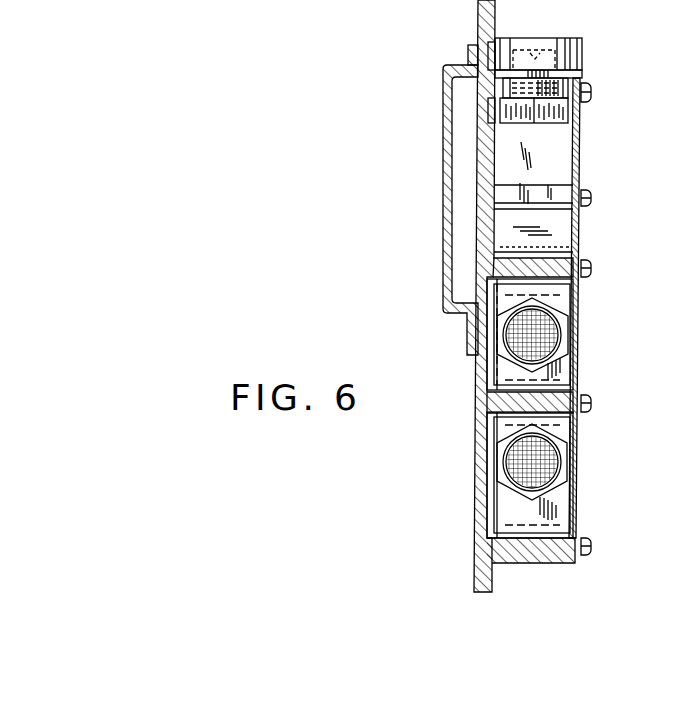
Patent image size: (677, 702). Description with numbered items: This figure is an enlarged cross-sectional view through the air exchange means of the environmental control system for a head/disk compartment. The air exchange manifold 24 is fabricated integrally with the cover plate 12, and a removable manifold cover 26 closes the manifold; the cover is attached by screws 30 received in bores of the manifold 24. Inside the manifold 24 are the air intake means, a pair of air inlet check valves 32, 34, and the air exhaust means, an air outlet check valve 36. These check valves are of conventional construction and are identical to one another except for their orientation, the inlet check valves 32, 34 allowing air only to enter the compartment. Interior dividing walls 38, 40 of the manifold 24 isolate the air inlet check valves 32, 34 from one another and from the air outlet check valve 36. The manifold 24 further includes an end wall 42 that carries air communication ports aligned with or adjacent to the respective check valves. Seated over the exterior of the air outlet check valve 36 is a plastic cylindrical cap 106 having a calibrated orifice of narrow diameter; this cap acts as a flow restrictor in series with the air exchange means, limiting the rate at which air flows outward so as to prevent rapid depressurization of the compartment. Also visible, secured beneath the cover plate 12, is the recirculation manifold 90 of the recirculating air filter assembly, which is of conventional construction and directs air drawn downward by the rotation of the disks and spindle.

The cover plate 12 is at (480, 567).
The air exchange manifold 24 is at (515, 204).
The manifold cover 26 is at (577, 342).
The screws 30 is at (588, 96).
The air inlet check valve 32 is at (510, 493).
The air inlet check valve 34 is at (501, 381).
The air outlet check valve 36 is at (562, 64).
The interior dividing wall 38 is at (547, 396).
The interior dividing wall 40 is at (557, 268).
The end wall 42 is at (560, 163).
The recirculation manifold 90 is at (442, 179).
The cylindrical cap 106 is at (582, 43).